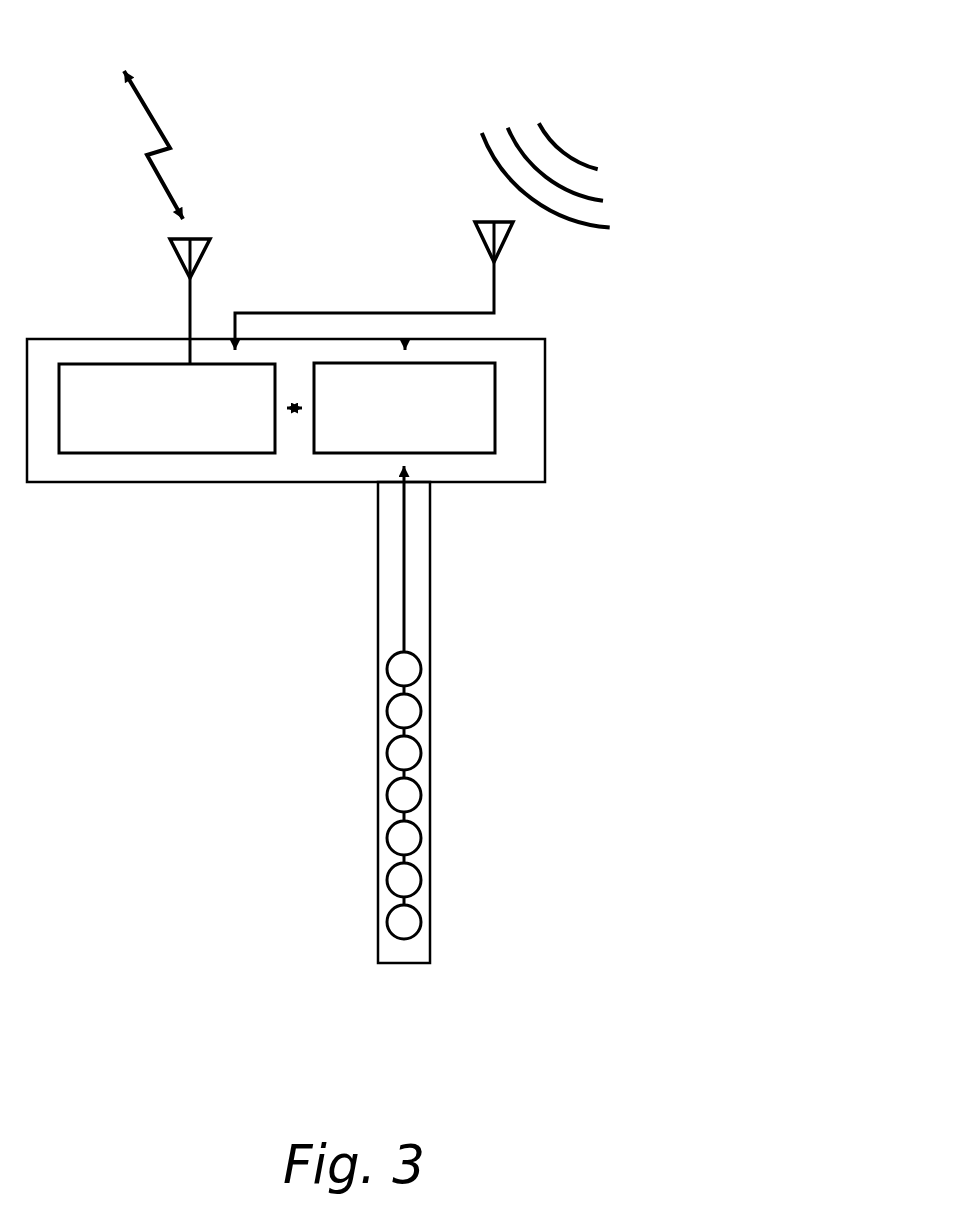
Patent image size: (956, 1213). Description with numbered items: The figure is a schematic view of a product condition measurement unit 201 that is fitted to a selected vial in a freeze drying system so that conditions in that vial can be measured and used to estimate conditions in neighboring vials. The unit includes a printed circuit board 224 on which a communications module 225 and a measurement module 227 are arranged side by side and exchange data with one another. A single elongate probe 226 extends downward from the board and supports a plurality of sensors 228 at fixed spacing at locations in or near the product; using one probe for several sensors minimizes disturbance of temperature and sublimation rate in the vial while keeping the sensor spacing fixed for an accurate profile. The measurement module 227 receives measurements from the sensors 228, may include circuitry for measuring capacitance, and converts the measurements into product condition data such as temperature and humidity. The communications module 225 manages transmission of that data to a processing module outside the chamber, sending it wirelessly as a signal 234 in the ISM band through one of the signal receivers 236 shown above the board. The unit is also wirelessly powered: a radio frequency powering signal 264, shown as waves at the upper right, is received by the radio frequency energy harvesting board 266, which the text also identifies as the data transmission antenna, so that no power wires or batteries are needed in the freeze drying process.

The product condition measurement unit 201 is at (327, 80).
The printed circuit board 224 is at (545, 408).
The communications module 225 is at (168, 453).
The single elongate probe 226 is at (378, 602).
The measurement module 227 is at (347, 453).
The sensors 228 is at (387, 838).
The signal 234 is at (157, 177).
The signal receiver 236 is at (205, 253).
The radio frequency powering signal 264 is at (487, 160).
The radio frequency energy harvesting board 266 is at (479, 230).